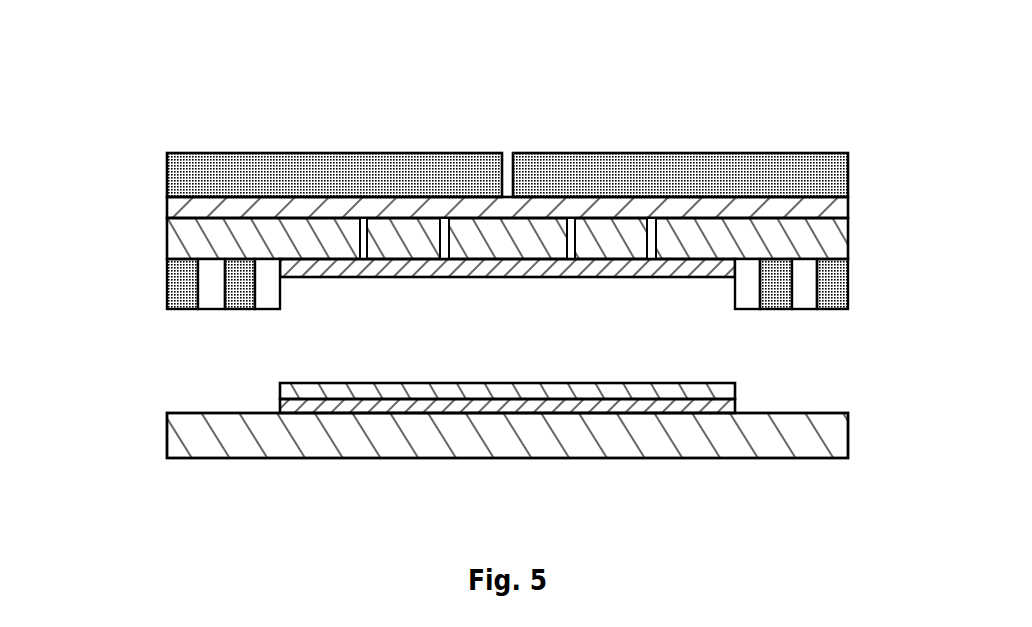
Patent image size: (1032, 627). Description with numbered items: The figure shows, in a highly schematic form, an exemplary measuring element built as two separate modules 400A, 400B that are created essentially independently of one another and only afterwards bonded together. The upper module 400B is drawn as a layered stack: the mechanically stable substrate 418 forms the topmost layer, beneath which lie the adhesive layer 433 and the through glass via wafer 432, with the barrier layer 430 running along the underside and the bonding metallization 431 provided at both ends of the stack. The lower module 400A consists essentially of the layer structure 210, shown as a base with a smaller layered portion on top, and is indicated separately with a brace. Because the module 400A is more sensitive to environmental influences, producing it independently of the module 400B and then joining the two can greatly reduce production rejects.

The module 400B is at (475, 197).
The module 400A is at (478, 474).
The mechanically stable substrate 418 is at (715, 177).
The adhesive layer 433 is at (769, 208).
The through glass via wafer 432 is at (822, 243).
The bonding metallization 431 is at (187, 283).
The barrier layer 430 is at (352, 267).
The layer structure 210 is at (850, 366).